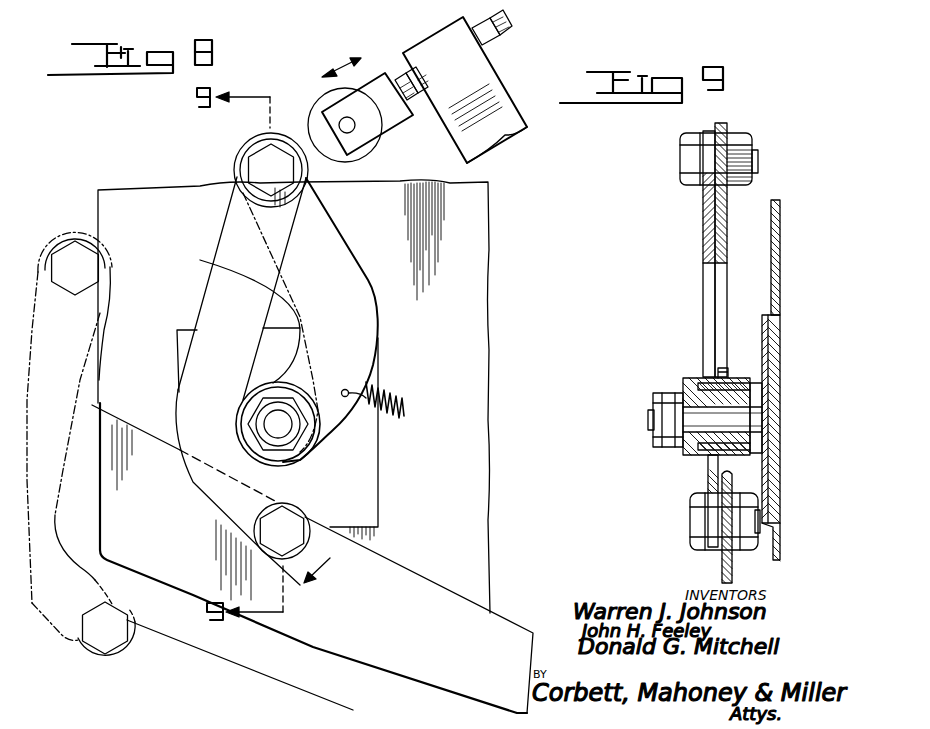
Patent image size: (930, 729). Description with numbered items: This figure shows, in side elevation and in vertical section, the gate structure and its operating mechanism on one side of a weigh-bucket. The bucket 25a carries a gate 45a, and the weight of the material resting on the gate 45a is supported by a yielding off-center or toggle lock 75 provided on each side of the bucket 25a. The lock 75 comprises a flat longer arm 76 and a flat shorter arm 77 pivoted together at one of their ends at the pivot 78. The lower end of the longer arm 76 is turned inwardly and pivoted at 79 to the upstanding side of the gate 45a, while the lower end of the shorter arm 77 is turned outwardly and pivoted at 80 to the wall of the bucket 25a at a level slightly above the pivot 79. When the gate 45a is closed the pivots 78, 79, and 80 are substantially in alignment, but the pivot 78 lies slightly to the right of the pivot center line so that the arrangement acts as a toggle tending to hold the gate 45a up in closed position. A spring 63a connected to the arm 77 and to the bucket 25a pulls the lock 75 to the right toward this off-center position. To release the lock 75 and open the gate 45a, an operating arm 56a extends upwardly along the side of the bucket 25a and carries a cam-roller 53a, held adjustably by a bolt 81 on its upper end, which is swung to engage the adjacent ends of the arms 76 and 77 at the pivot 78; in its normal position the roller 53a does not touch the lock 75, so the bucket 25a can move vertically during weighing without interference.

In FIG. 8, the bucket 25a is at (478, 370).
In FIG. 9, the bucket 25a is at (785, 212).
In FIG. 8, the gate 45a is at (503, 627).
In FIG. 9, the gate 45a is at (716, 579).
In FIG. 8, the cam-roller 53a is at (372, 148).
In FIG. 8, the operating arm 56a is at (485, 145).
In FIG. 8, the spring 63a is at (392, 416).
In FIG. 8, the toggle lock 75 is at (200, 470).
In FIG. 9, the toggle lock 75 is at (676, 372).
In FIG. 8, the longer arm 76 is at (228, 226).
In FIG. 9, the longer arm 76 is at (703, 222).
In FIG. 8, the shorter arm 77 is at (338, 232).
In FIG. 9, the shorter arm 77 is at (716, 198).
In FIG. 8, the pivot 78 is at (262, 160).
In FIG. 9, the pivot 78 is at (728, 132).
In FIG. 8, the pivot 79 is at (262, 528).
In FIG. 9, the pivot 79 is at (698, 525).
In FIG. 8, the pivot 80 is at (281, 436).
In FIG. 9, the pivot 80 is at (648, 432).
In FIG. 8, the bolt 81 is at (513, 28).